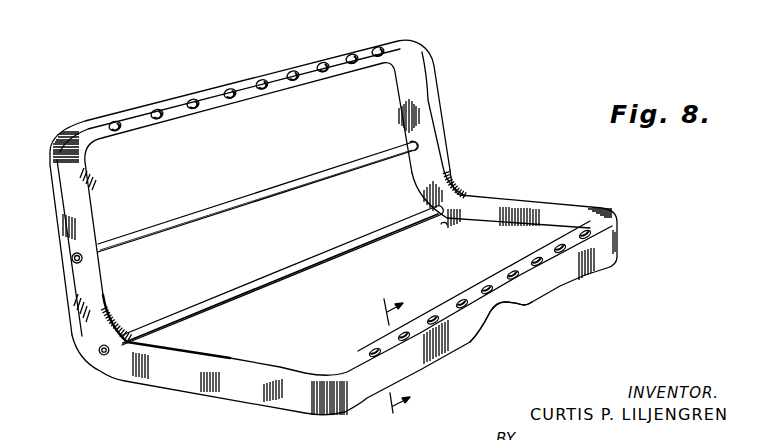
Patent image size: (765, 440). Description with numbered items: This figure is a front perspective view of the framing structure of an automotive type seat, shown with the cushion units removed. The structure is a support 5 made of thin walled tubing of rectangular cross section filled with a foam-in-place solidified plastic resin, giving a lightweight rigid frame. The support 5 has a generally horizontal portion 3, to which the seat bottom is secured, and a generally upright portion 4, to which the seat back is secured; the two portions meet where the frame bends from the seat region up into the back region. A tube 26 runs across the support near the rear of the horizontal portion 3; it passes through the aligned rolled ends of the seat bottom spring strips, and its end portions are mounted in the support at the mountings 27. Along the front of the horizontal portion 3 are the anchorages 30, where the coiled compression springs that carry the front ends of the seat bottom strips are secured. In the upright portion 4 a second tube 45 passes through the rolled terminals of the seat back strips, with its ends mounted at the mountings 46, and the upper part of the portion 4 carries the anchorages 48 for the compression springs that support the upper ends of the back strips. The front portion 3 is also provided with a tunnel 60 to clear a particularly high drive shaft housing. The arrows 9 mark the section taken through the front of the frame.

The generally horizontal portion 3 is at (217, 393).
The generally upright portion 4 is at (64, 224).
The support 5 is at (119, 381).
The section line 9- 9 is at (390, 364).
The tube 26 is at (221, 300).
The tube end mounting 27 is at (98, 352).
The spring anchorage in front portion of support 30 is at (486, 287).
The tube 45 is at (256, 194).
The tube end mounting 46 is at (70, 260).
The spring anchorage in upper portion of support 48 is at (158, 110).
The tunnel 60 is at (498, 308).